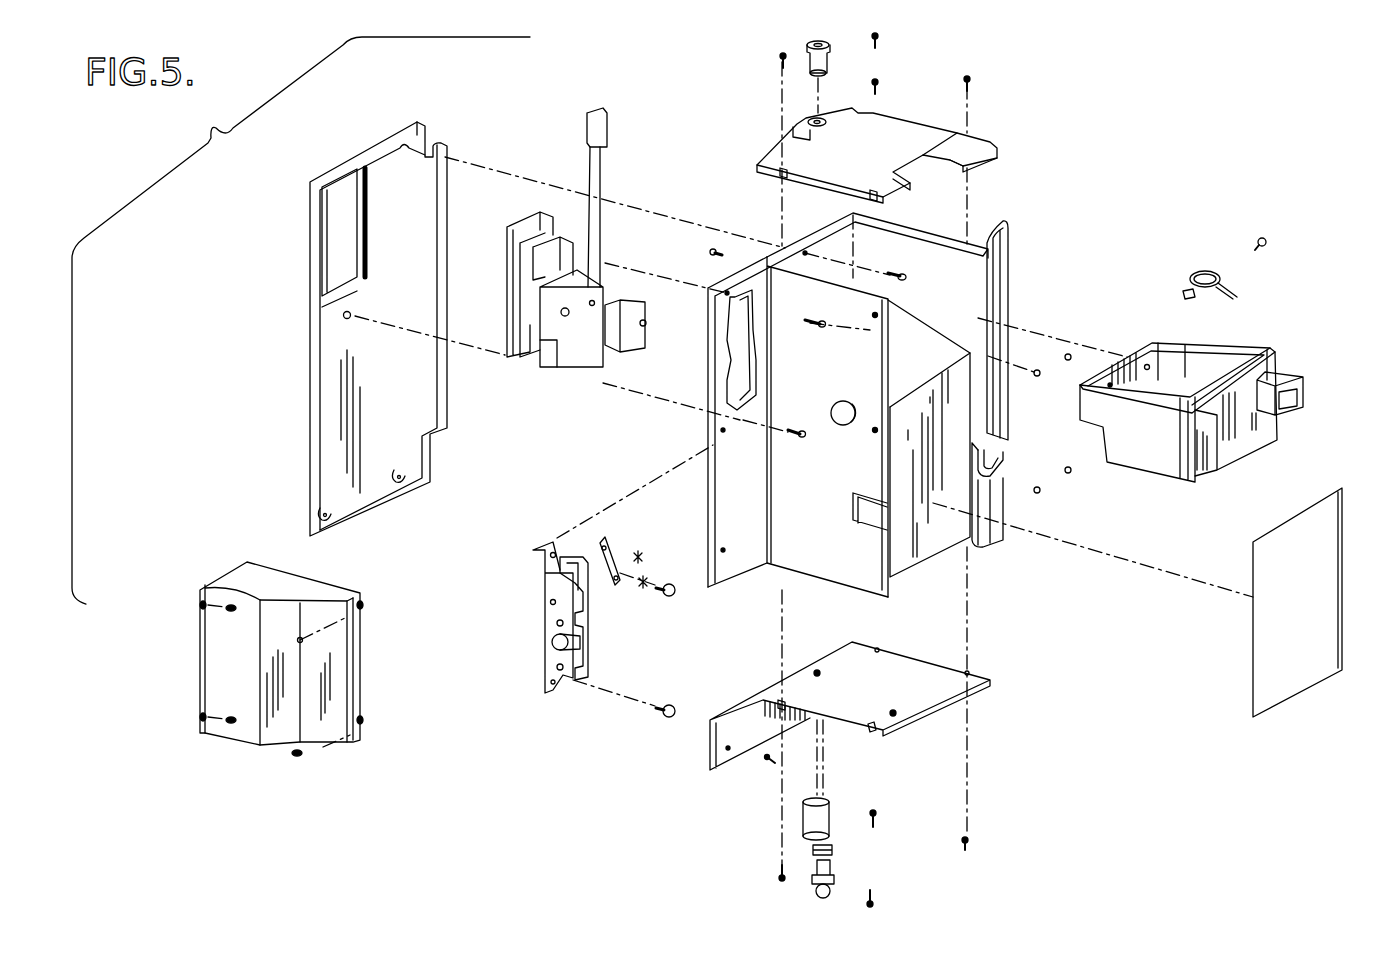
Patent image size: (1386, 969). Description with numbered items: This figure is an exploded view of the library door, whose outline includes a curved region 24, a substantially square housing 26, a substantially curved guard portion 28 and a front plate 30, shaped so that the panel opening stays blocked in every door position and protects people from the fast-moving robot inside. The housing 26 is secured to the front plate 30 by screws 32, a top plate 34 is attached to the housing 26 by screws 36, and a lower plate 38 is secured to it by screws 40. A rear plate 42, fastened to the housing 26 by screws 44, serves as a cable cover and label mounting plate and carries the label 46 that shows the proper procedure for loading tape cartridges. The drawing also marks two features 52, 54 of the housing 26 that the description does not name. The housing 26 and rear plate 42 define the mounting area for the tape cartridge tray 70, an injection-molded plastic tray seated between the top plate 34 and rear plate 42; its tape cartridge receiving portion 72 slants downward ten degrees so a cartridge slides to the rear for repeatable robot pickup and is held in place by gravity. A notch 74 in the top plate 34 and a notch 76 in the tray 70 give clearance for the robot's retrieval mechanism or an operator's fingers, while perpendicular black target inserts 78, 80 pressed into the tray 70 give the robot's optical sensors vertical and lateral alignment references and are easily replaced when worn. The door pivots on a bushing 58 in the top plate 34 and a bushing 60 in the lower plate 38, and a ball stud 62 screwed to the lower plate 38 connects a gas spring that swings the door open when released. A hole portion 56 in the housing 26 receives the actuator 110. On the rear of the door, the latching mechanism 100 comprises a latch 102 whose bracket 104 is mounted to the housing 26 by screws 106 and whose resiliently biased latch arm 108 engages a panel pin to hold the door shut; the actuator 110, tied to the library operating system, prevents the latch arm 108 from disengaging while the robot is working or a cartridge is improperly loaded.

The curved region 24 is at (1012, 253).
The housing 26 is at (857, 401).
The curved guard portion 28 is at (222, 672).
The front plate 30 is at (367, 153).
The screws 32 is at (905, 277).
The top plate 34 is at (882, 155).
The screws 36 is at (810, 55).
The lower plate 38 is at (978, 676).
The screws 40 is at (967, 847).
The rear plate 42 is at (950, 533).
The screws 44 is at (958, 352).
The label 46 is at (1253, 567).
The rear wall 52 is at (805, 525).
The top flange 54 is at (897, 222).
The hole portion 56 is at (735, 368).
The bushing 58 is at (807, 44).
The bushing 60 is at (802, 820).
The ball stud 62 is at (815, 893).
The tape cartridge tray 70 is at (1223, 355).
The tape cartridge receiving portion 72 is at (1195, 340).
The notch 74 is at (995, 149).
The notch 76 is at (1243, 402).
The target insert 78 is at (1295, 410).
The target insert 80 is at (1300, 398).
The latching mechanism 100 is at (595, 623).
The latch 102 is at (545, 658).
The bracket 104 is at (550, 587).
The screws 106 is at (675, 712).
The latch arm 108 is at (578, 644).
The actuator 110 is at (583, 345).